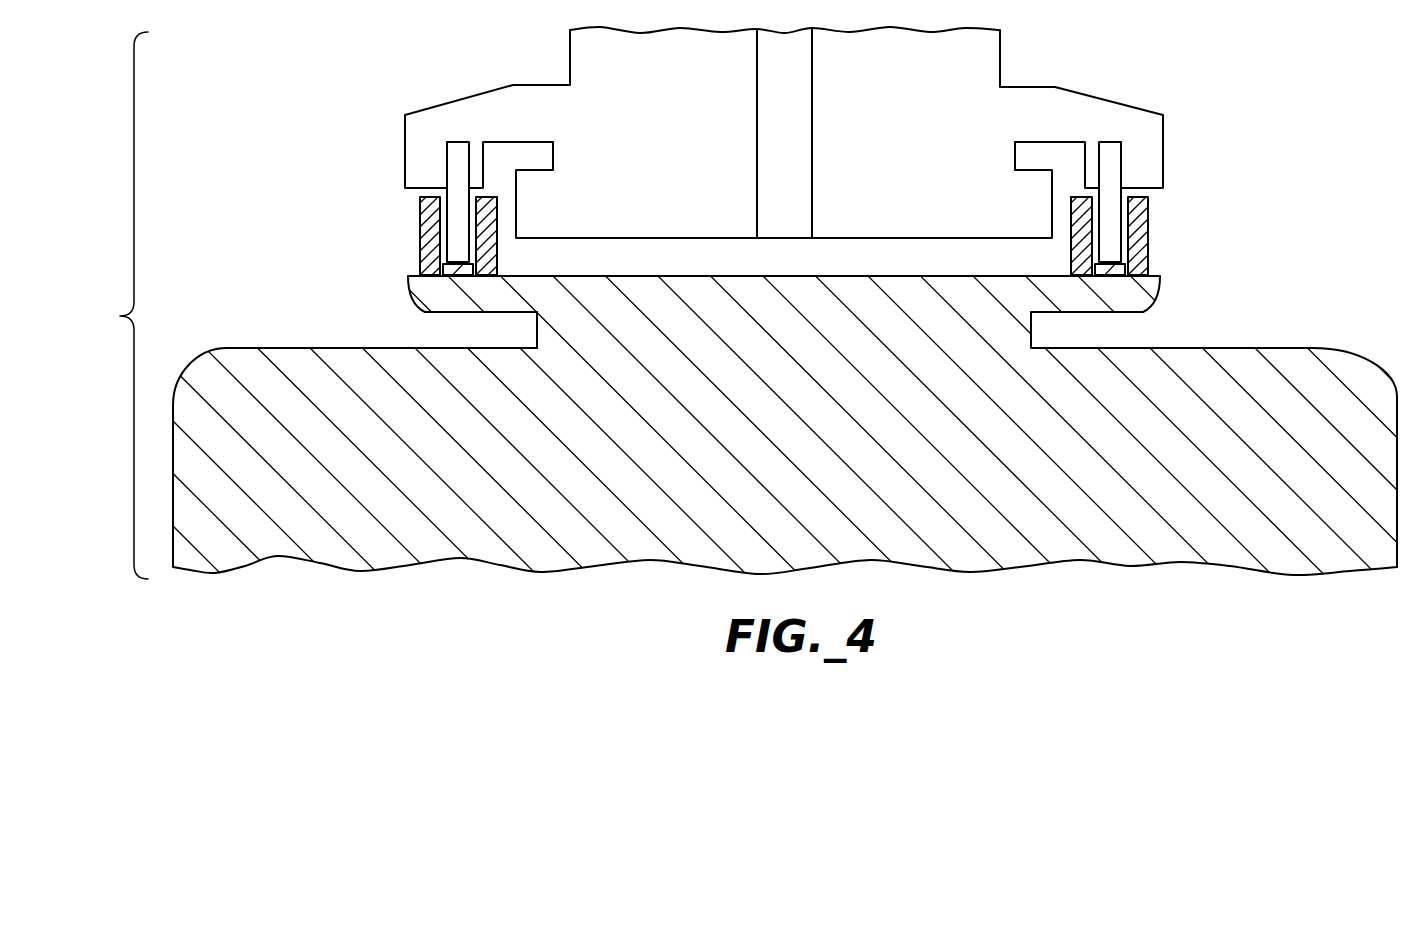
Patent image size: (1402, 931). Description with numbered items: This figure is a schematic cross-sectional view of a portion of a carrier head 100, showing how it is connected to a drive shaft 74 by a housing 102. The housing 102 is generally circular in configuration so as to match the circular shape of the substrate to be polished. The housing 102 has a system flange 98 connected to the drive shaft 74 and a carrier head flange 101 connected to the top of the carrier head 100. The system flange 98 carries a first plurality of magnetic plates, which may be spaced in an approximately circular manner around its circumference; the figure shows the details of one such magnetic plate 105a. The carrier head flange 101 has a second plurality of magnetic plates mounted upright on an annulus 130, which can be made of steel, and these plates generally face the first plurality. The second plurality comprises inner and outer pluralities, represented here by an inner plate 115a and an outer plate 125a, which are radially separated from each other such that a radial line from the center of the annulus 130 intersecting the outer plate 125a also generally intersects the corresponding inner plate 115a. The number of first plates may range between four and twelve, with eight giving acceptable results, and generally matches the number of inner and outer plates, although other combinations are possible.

The carrier head 100 is at (108, 305).
The carrier head flange 101 is at (415, 300).
The housing 102 is at (469, 96).
The drive shaft 74 is at (813, 55).
The system flange 98 is at (404, 160).
The magnetic plate 105a is at (460, 175).
The inner magnetic plate 115a is at (487, 248).
The outer magnetic plate 125a is at (435, 241).
The annulus 130 is at (467, 304).